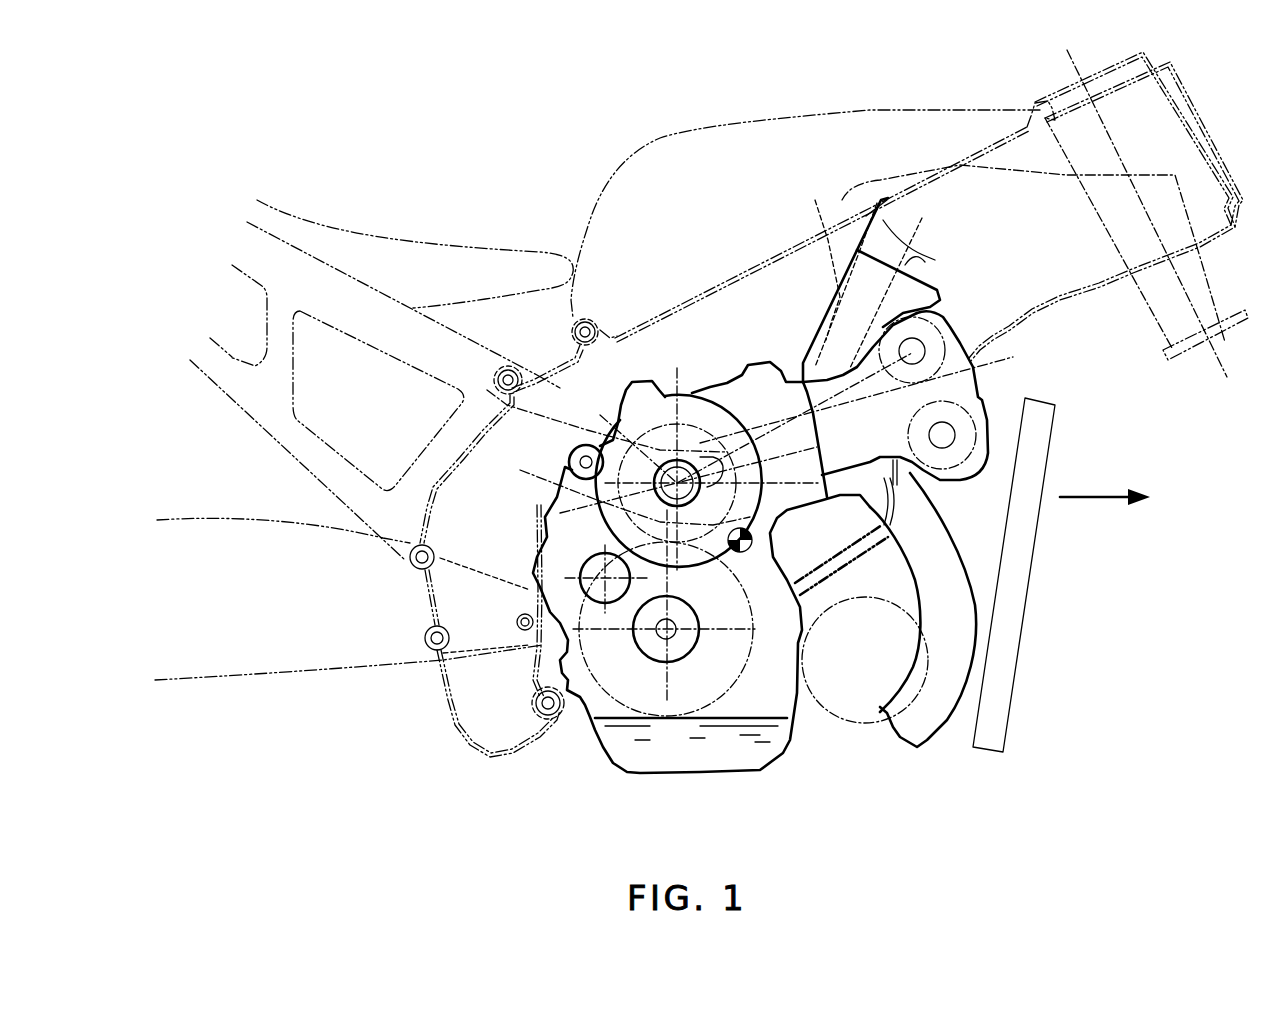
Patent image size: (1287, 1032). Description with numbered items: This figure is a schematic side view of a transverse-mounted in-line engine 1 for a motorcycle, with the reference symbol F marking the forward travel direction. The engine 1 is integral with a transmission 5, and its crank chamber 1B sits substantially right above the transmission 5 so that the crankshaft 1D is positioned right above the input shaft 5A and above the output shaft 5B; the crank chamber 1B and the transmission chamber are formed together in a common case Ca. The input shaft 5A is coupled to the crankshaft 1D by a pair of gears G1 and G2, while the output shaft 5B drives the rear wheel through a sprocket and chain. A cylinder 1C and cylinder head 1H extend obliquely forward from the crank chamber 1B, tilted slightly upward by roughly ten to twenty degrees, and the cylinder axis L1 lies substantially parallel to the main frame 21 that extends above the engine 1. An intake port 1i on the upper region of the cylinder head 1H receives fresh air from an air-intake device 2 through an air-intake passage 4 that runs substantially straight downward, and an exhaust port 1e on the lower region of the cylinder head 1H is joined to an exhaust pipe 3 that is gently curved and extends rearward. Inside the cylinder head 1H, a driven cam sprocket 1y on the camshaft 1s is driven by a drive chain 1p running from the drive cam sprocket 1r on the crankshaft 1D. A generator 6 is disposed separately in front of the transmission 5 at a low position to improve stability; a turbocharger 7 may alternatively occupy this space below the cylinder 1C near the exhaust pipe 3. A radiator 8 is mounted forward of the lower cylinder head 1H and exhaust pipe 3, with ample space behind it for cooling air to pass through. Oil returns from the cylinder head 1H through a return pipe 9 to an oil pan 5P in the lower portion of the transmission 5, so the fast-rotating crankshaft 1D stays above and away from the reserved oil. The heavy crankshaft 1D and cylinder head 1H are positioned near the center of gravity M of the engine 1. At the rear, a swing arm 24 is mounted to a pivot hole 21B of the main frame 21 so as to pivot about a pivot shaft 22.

The engine 1 is at (807, 347).
The crank chamber 1B is at (647, 447).
The cylinder 1C is at (765, 375).
The crankshaft 1D is at (673, 457).
The cylinder head 1H is at (980, 460).
The exhaust port 1e is at (827, 473).
The intake port 1i is at (805, 420).
The drive chain 1p is at (705, 420).
The drive cam sprocket 1r is at (487, 390).
The camshaft 1s is at (960, 428).
The driven cam sprocket 1y is at (953, 433).
The air-intake device 2 is at (882, 240).
The exhaust pipe 3 is at (943, 727).
The air-intake passage 4 is at (803, 333).
The transmission 5 is at (803, 689).
The input shaft 5A is at (687, 642).
The output shaft 5B is at (600, 540).
The oil pan 5P is at (672, 760).
The generator 6 is at (926, 700).
The turbocharger 7 is at (893, 687).
The radiator 8 is at (1027, 598).
The return pipe 9 is at (858, 590).
The main frame 21 is at (588, 262).
The pivot hole 21B is at (543, 643).
The pivot shaft 22 is at (517, 623).
The swing arm 24 is at (284, 675).
The case Ca is at (590, 742).
The forward direction F is at (1117, 496).
The gear G1 is at (617, 485).
The gear G2 is at (712, 720).
The axis of cylinder L1 is at (1013, 357).
The center of gravity M is at (630, 555).